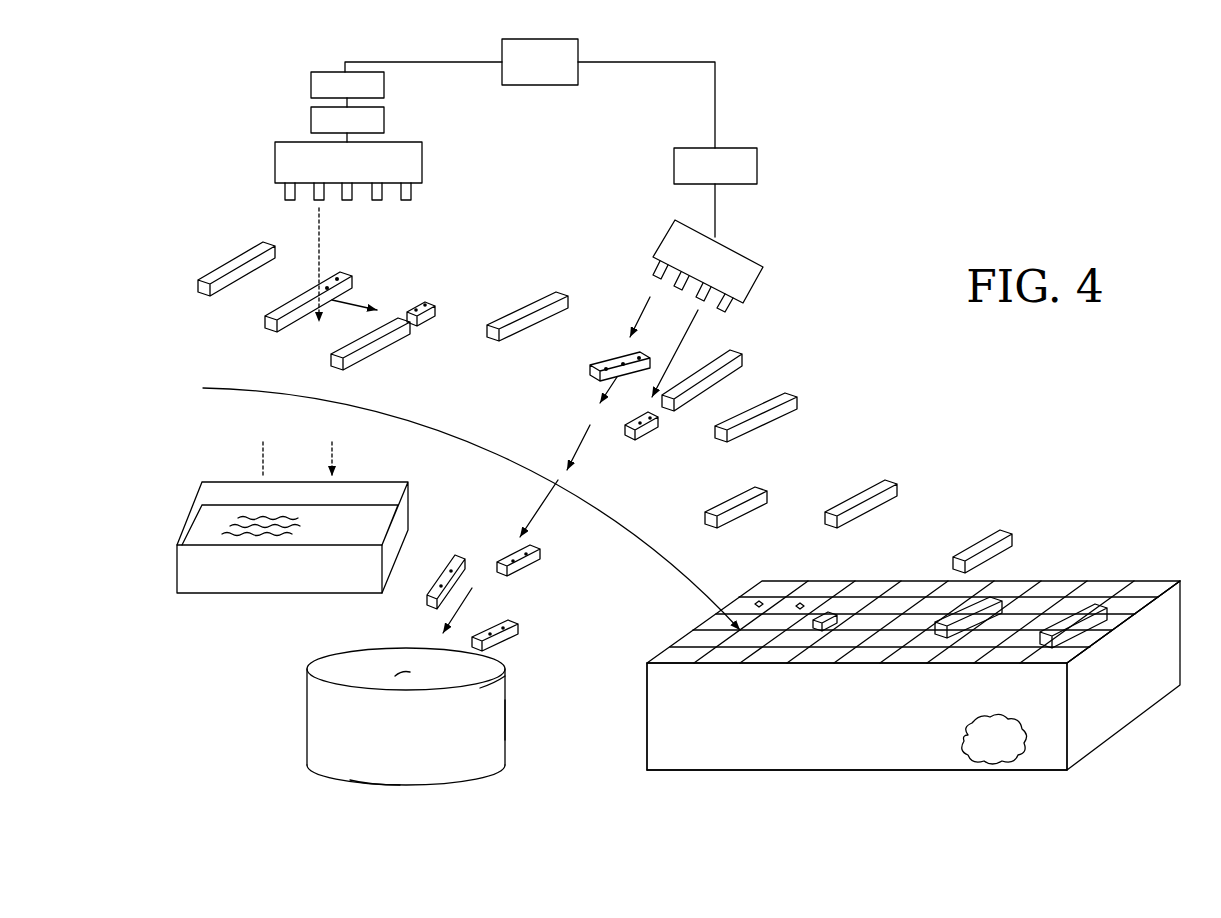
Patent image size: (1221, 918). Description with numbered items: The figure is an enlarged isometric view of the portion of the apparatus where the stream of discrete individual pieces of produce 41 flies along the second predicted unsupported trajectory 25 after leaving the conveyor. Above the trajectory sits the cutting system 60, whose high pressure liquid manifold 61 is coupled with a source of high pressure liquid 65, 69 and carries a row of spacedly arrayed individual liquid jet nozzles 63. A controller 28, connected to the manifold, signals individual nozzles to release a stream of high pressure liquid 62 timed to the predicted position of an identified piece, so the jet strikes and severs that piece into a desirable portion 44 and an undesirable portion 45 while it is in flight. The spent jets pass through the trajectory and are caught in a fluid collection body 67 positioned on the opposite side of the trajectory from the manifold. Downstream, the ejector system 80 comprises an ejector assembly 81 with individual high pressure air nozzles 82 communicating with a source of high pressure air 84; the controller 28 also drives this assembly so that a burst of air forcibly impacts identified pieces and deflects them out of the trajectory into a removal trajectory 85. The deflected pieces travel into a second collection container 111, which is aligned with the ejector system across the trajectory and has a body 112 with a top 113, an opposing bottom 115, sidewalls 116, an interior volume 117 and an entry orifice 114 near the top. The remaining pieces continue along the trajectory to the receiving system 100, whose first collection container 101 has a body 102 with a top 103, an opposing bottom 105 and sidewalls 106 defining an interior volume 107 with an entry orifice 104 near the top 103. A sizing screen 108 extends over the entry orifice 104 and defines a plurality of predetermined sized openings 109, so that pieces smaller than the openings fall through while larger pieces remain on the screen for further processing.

The controller 28 is at (530, 93).
The cutting system 60 is at (450, 125).
The source of high pressure liquid 65 is at (347, 89).
The source of high pressure liquid 69 is at (926, 572).
The high pressure liquid manifold 61 is at (348, 162).
The individual liquid jet nozzles 63 is at (405, 203).
The stream of high pressure liquid 62 is at (318, 232).
The source of high pressure air 84 is at (715, 192).
The ejector system 80 is at (760, 240).
The ejector assembly 81 is at (708, 261).
The individual high pressure air nozzles 82 is at (655, 268).
The discrete individual pieces of produce 41 is at (262, 334).
The desirable portion 44 is at (288, 300).
The undesirable portion 45 is at (333, 275).
The removal trajectory 85 is at (585, 458).
The second predicted unsupported trajectory 25 is at (444, 440).
The fluid collection body 67 is at (292, 537).
The body 112 is at (402, 721).
The top 113 is at (340, 652).
The entry orifice 114 is at (490, 665).
The interior volume 117 is at (400, 673).
The second collection container 111 is at (490, 716).
The sidewalls 116 is at (368, 760).
The bottom 115 is at (465, 783).
The receiving system 100 is at (1097, 540).
The first collection container 101 is at (1140, 682).
The body 102 is at (672, 718).
The top 103 is at (1150, 578).
The entry orifice 104 is at (1025, 606).
The bottom 105 is at (845, 771).
The sidewalls 106 is at (857, 716).
The interior volume 107 is at (994, 739).
The sizing screen 108 is at (700, 628).
The predetermined sized openings 109 is at (803, 603).